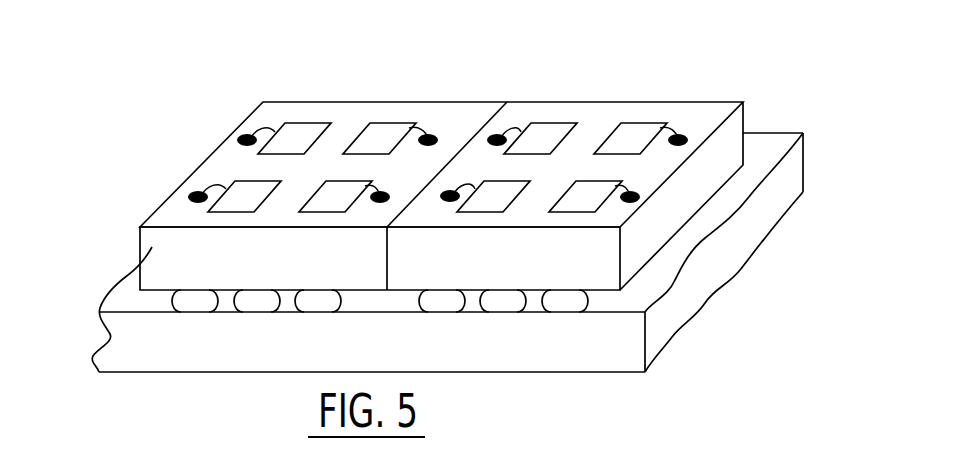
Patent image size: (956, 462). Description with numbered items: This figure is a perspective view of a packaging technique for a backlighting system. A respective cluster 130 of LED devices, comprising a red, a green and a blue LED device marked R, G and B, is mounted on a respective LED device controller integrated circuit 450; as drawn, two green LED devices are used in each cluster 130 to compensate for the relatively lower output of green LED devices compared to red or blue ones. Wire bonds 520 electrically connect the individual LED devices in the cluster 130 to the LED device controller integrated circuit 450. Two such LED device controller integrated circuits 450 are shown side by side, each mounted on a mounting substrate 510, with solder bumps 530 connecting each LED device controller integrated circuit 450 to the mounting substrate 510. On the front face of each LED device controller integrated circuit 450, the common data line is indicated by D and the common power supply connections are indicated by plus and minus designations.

The cluster of LED devices 130 is at (330, 150).
The LED device controller integrated circuit 450 is at (153, 247).
The mounting substrate 510 is at (130, 340).
The wire bonds 520 is at (260, 130).
The solder bumps 530 is at (190, 300).